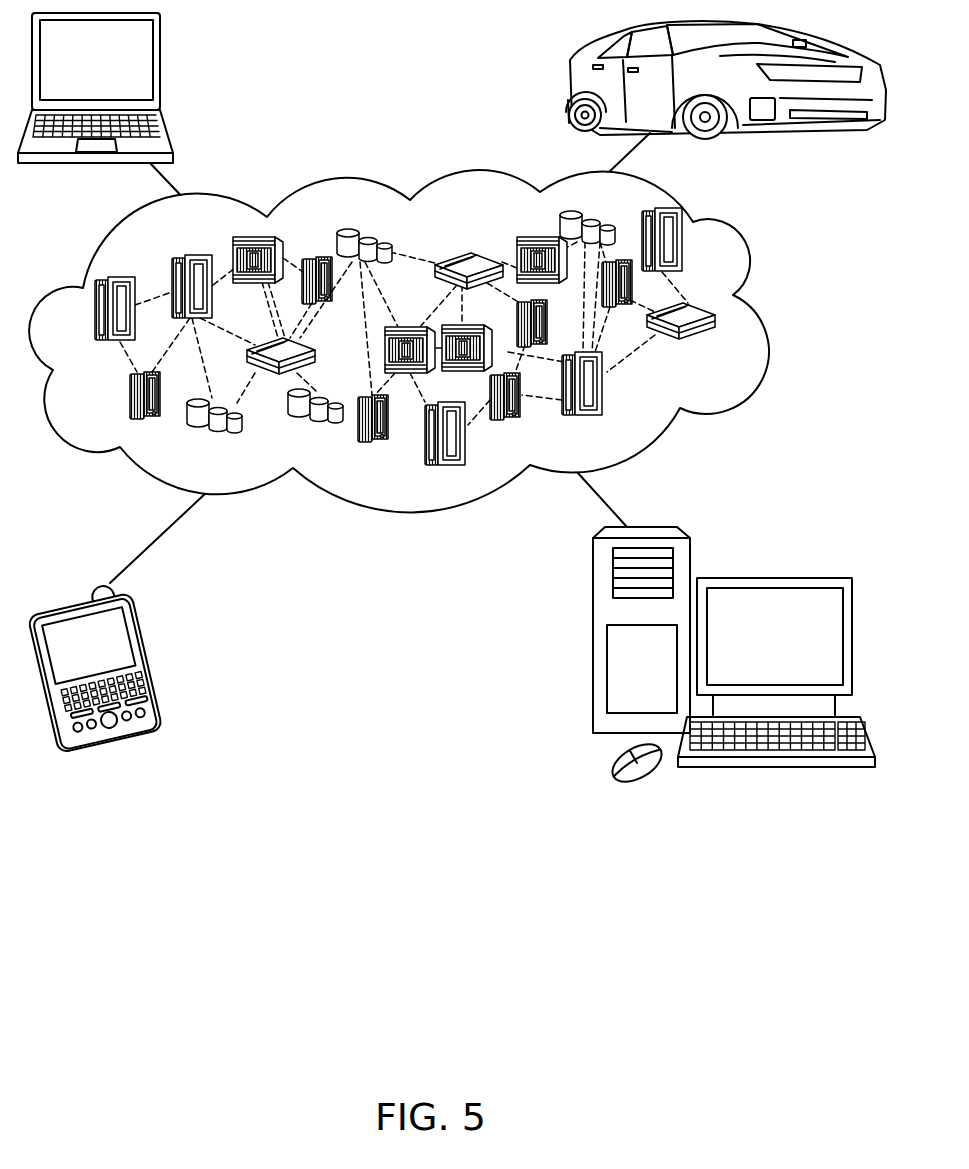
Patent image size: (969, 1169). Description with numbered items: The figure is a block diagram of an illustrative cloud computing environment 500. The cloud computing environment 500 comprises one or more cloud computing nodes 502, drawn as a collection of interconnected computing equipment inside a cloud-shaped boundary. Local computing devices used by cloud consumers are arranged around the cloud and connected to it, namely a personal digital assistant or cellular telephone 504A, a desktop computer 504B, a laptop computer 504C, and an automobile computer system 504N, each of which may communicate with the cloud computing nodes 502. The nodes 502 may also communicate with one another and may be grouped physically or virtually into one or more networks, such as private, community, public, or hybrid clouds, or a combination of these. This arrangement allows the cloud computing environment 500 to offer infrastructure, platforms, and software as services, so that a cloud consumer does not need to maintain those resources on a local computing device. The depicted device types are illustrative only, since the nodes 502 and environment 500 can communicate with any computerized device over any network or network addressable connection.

The cloud computing environment 500 is at (722, 312).
The cloud computing nodes 502 is at (722, 345).
The personal digital assistant (PDA) or cellular telephone 504A is at (140, 633).
The desktop computer 504B is at (760, 577).
The laptop computer 504C is at (160, 48).
The automobile computer system 504N is at (570, 84).